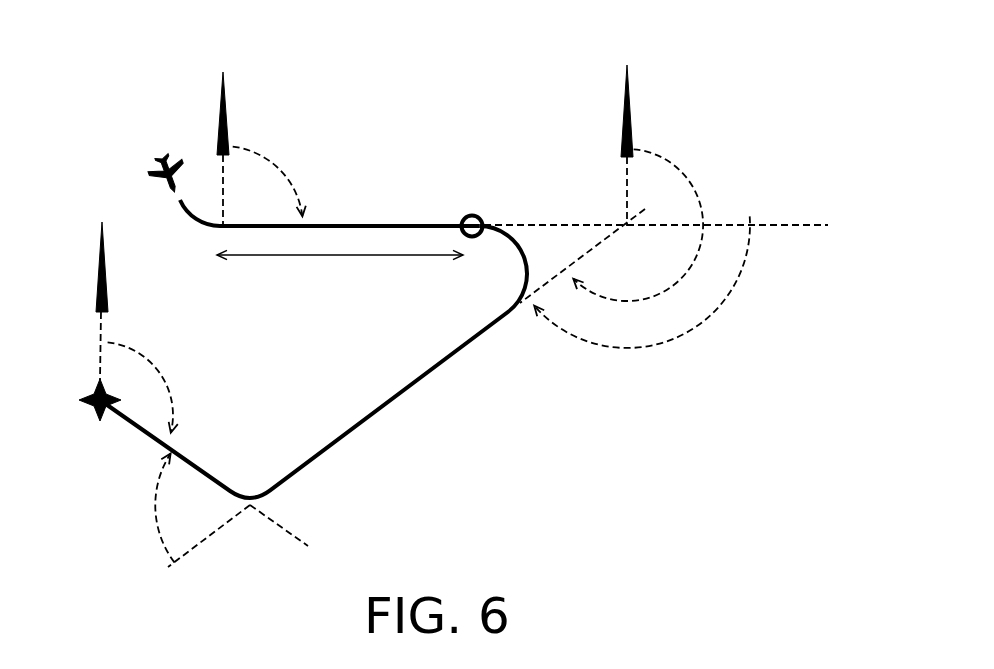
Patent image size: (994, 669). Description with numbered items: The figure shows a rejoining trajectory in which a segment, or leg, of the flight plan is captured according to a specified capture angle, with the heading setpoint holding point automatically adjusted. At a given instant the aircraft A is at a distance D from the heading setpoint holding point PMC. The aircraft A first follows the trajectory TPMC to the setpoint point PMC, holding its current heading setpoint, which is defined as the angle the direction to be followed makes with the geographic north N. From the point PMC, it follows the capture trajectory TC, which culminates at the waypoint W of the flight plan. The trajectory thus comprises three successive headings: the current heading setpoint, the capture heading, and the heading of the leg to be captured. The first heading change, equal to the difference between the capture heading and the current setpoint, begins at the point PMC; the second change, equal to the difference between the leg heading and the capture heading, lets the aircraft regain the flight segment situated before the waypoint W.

The aircraft A is at (143, 178).
The heading setpoint holding point PMC is at (465, 216).
The trajectory to the setpoint point TPMC is at (374, 227).
The capture trajectory TC is at (377, 408).
The waypoint W is at (100, 421).
The geographic north N is at (364, 175).
The distance D is at (340, 264).